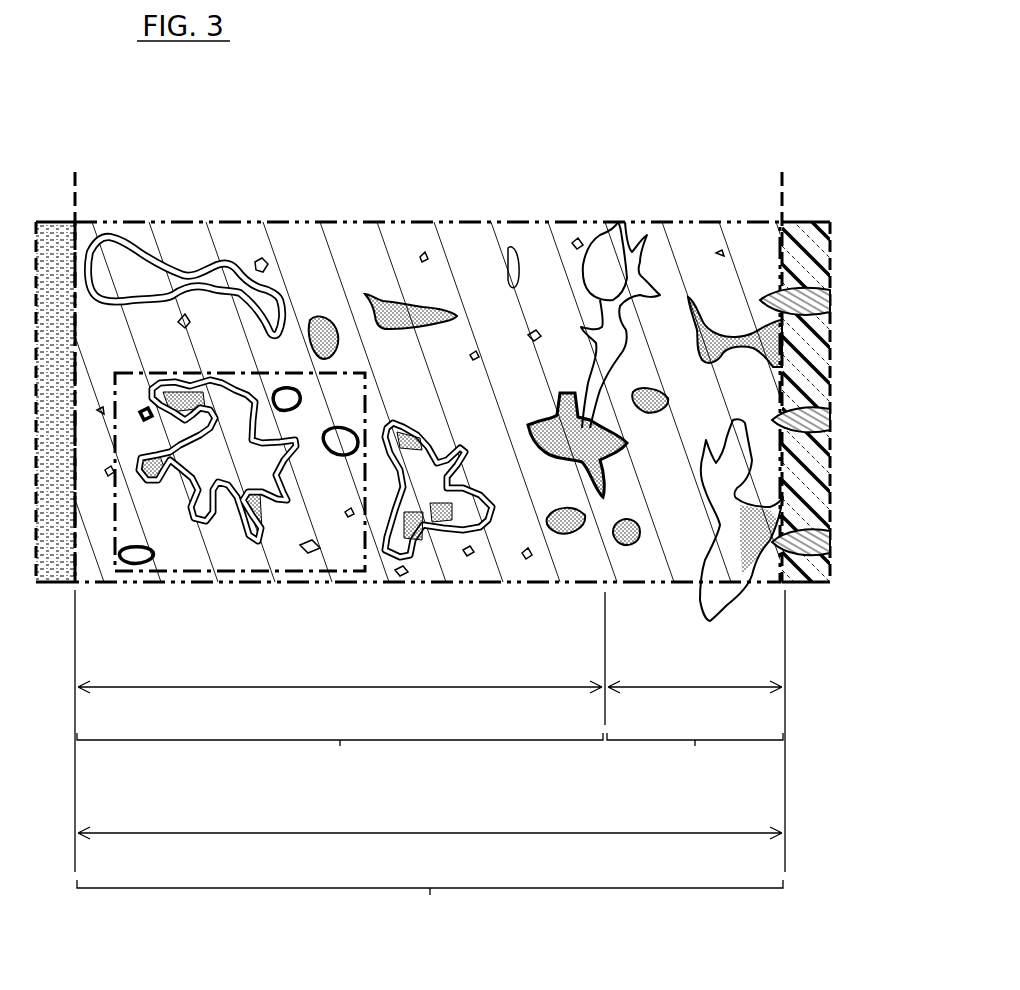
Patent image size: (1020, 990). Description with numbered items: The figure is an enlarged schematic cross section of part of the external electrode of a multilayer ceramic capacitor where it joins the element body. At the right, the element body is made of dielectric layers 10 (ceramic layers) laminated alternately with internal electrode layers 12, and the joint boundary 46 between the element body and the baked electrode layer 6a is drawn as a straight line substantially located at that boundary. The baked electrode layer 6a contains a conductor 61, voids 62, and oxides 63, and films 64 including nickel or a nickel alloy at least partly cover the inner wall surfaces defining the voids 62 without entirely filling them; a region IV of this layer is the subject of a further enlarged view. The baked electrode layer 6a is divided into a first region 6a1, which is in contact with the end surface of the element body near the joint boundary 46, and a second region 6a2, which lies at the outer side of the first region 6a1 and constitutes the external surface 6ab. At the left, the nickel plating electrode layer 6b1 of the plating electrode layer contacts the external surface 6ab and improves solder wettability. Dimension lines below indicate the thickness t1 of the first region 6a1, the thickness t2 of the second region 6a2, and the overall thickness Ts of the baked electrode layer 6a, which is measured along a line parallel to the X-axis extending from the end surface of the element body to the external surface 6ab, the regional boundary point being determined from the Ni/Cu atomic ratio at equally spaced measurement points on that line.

The nickel plating electrode layer 6b1 is at (55, 240).
The external surface 6ab is at (73, 198).
The joint boundary 46 is at (787, 193).
The conductor 61 is at (482, 582).
The dielectric layers 10 is at (813, 262).
The internal electrode layers 12 is at (823, 310).
The films 64 is at (210, 265).
The oxides 63 is at (383, 302).
The voids 62 is at (585, 248).
The region IV is at (357, 585).
The thickness of the second region t2 is at (340, 702).
The thickness of the first region t1 is at (695, 702).
The second region 6a2 is at (340, 755).
The first region 6a1 is at (695, 755).
The thickness of the baked electrode layer Ts is at (430, 848).
The baked electrode layer 6a is at (430, 906).